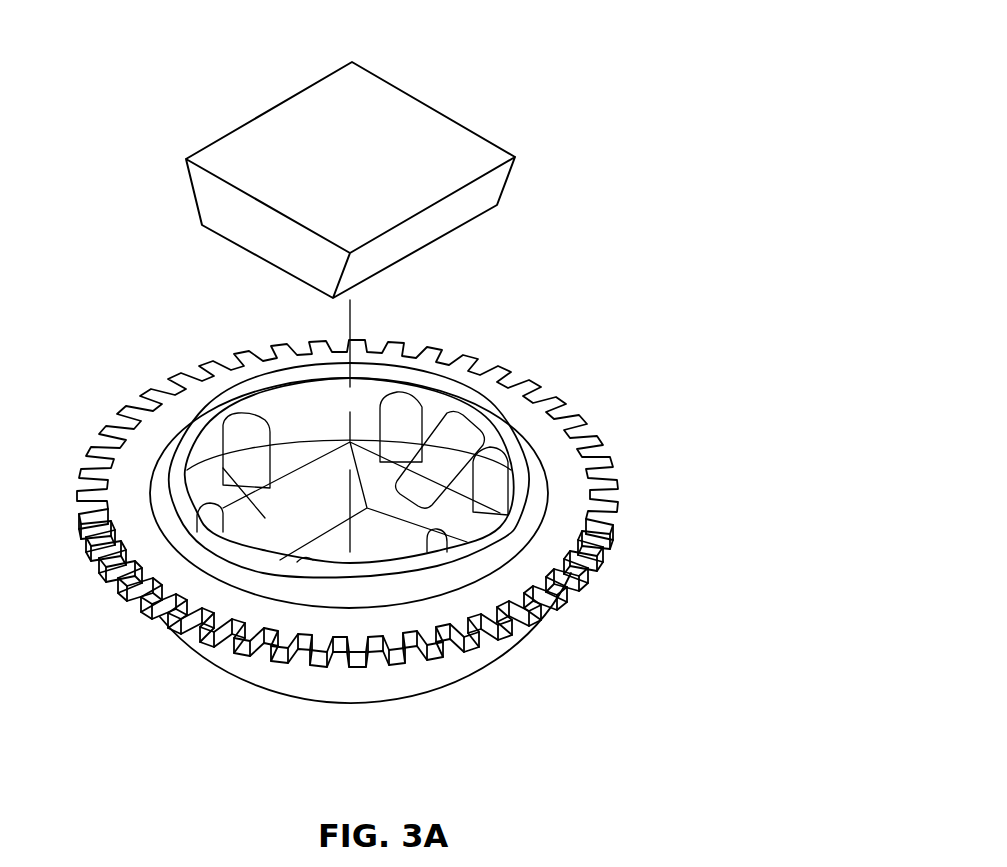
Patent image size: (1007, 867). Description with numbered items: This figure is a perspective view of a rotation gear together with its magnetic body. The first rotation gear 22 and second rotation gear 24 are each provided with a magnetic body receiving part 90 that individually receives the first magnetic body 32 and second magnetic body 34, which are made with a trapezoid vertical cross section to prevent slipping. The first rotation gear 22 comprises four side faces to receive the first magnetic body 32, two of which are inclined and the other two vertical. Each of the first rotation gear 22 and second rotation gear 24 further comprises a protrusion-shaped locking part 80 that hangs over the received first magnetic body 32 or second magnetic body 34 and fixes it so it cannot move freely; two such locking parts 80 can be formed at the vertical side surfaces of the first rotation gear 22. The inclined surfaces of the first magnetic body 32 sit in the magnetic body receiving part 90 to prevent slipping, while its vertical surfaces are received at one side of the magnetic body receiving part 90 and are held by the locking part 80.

The first rotation gear 22 is at (484, 521).
The second rotation gear 24 is at (577, 505).
The first magnetic body 32 is at (439, 149).
The second magnetic body 34 is at (403, 142).
The locking part 80 is at (447, 447).
The magnetic body receiving part 90 is at (182, 461).